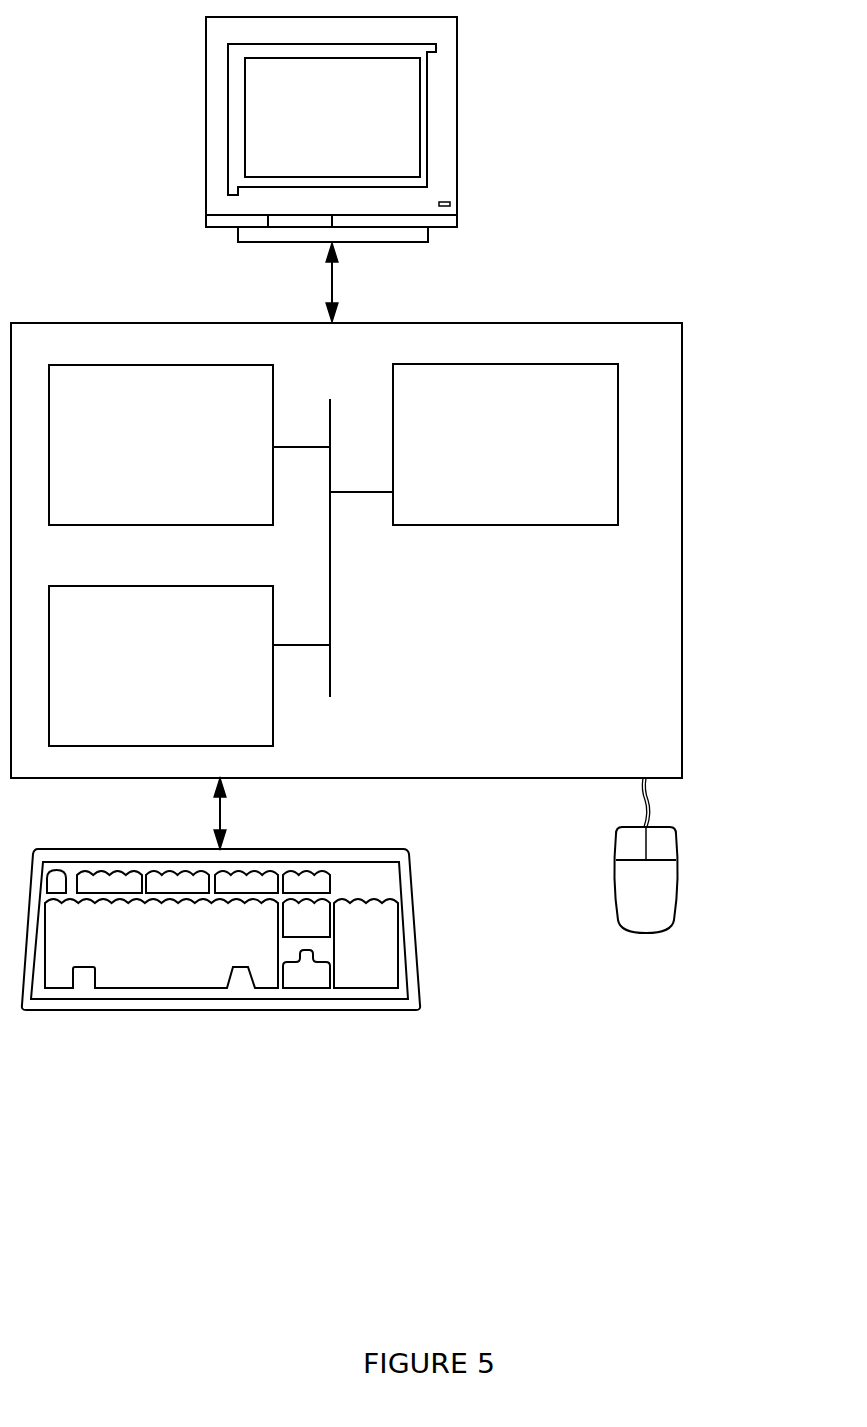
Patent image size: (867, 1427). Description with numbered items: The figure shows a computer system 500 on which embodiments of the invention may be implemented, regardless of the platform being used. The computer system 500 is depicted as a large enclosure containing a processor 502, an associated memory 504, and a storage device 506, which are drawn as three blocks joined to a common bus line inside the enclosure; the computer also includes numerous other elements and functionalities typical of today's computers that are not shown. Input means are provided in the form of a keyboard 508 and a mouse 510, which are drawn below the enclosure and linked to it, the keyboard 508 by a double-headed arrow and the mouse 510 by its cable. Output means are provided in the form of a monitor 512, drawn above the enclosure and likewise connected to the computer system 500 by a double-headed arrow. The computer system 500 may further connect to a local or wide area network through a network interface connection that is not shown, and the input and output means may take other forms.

The computer system 500 is at (658, 192).
The processor 502 is at (501, 457).
The memory 504 is at (141, 458).
The storage device 506 is at (137, 680).
The keyboard 508 is at (132, 968).
The mouse 510 is at (624, 903).
The monitor 512 is at (311, 133).